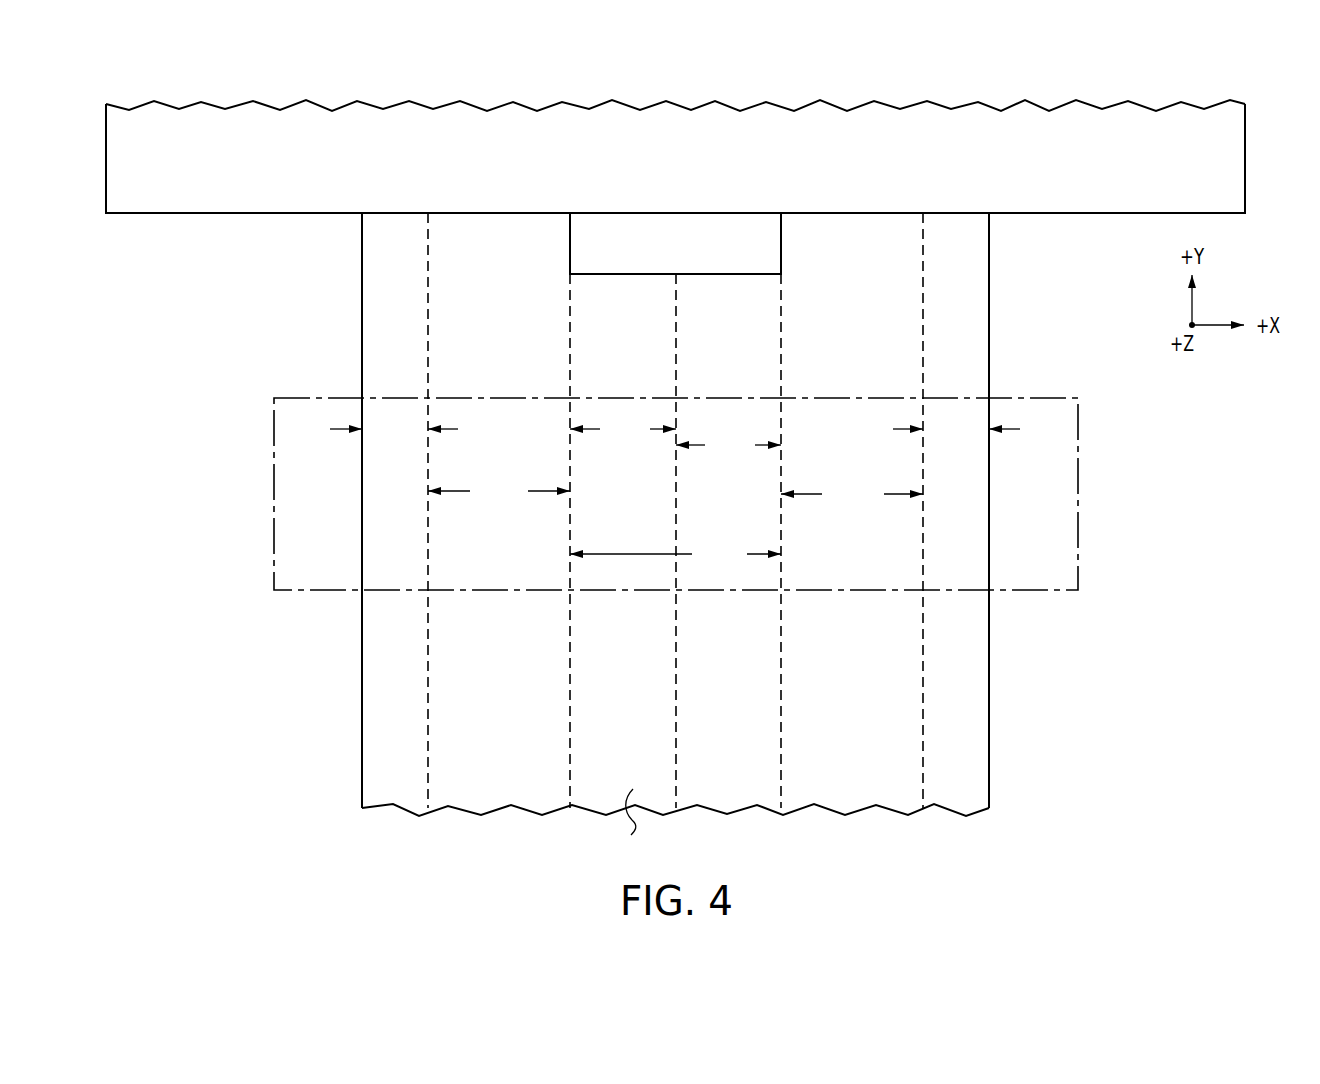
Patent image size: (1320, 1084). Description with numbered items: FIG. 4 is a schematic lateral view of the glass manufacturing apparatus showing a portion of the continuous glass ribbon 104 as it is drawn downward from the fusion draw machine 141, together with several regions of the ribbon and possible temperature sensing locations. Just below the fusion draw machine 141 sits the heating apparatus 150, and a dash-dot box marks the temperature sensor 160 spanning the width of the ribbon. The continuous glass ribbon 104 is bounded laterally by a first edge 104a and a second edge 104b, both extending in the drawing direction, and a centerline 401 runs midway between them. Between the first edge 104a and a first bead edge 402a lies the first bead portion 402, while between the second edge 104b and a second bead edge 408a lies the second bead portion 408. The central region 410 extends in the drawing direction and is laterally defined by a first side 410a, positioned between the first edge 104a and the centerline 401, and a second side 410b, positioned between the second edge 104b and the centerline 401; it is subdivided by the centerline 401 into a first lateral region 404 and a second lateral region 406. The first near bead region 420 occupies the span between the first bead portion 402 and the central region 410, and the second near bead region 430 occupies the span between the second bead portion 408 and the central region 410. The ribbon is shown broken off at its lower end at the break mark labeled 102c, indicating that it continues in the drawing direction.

The fusion draw machine 141 is at (1245, 170).
The continuous glass ribbon 104 is at (350, 265).
The first edge 104a is at (362, 750).
The second edge 104b is at (989, 752).
The heating apparatus 150 is at (793, 271).
The centerline 401 is at (676, 345).
The first bead portion 402 is at (394, 430).
The first bead edge 402a is at (428, 623).
The first lateral region 404 is at (623, 430).
The second lateral region 406 is at (728, 446).
The second bead portion 408 is at (956, 430).
The second bead edge 408a is at (923, 625).
The central region 410 is at (675, 555).
The first side 410a is at (570, 750).
The second side 410b is at (781, 752).
The first near bead region 420 is at (499, 492).
The second near bead region 430 is at (852, 495).
The temperature sensor 160 is at (1078, 468).
The portion of body 102c is at (627, 823).